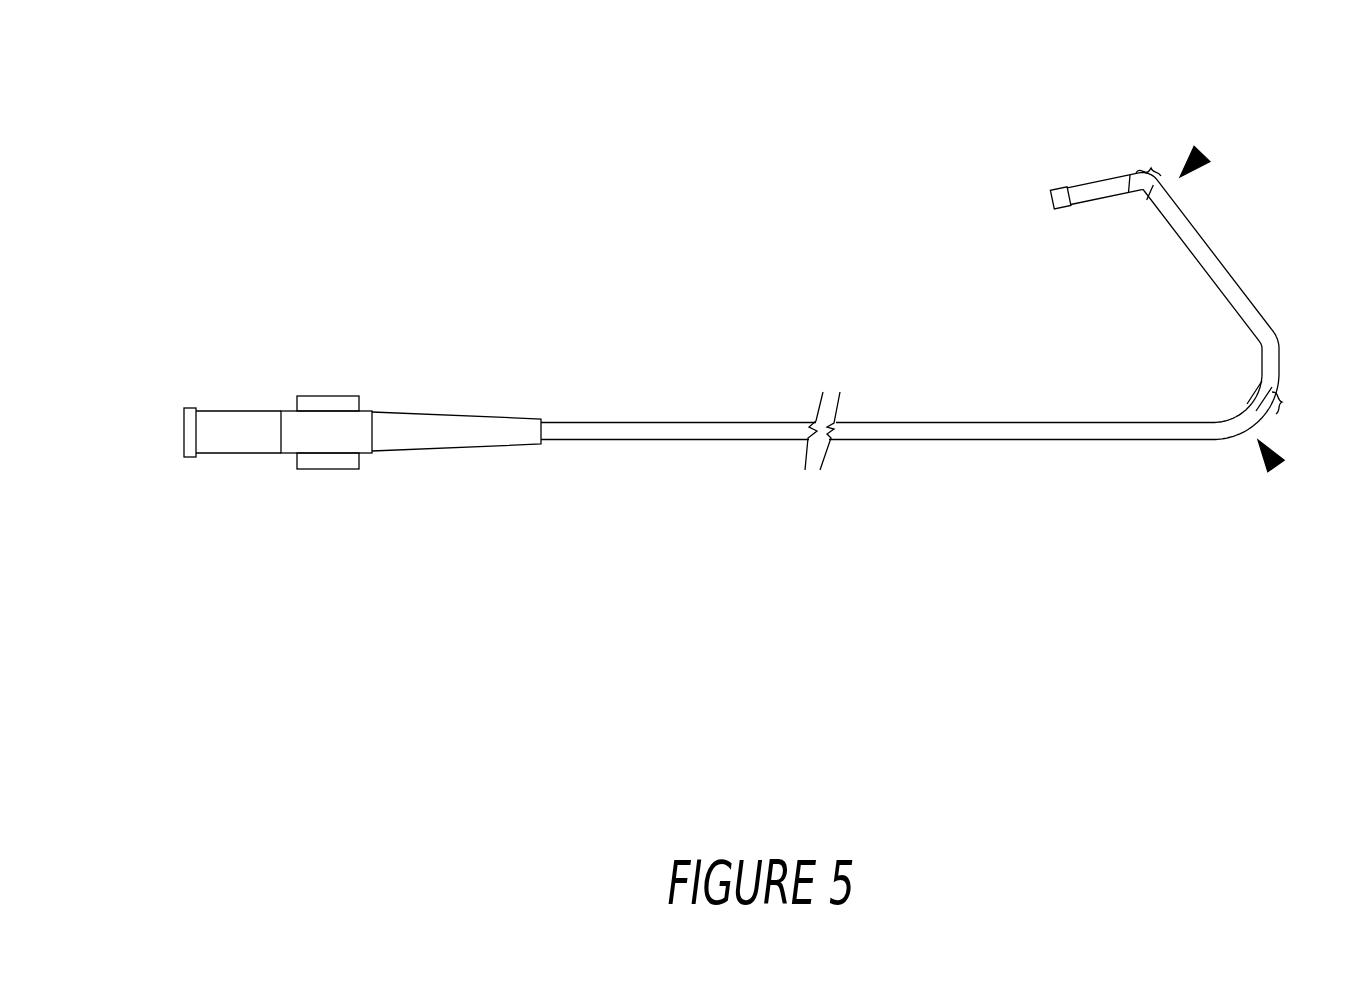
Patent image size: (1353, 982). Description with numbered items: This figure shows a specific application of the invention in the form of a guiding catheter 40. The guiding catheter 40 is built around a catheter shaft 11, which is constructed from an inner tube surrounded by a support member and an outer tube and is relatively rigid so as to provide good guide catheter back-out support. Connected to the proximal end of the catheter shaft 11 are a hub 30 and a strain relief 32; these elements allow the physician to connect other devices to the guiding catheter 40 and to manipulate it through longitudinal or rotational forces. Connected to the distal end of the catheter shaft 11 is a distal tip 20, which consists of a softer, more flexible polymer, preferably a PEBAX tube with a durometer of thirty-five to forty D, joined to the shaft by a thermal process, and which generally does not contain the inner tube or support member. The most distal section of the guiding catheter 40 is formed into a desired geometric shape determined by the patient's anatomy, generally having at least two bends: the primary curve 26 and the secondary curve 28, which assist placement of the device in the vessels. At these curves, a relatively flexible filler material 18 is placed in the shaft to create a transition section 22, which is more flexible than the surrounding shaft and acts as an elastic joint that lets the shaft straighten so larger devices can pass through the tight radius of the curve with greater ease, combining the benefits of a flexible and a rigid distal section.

The catheter shaft 11 is at (1072, 438).
The filler material 18 is at (1140, 187).
The distal tip 20 is at (1059, 193).
The transition section 22 is at (1225, 280).
The primary curve 26 is at (1204, 152).
The secondary curve 28 is at (1276, 467).
The hub 30 is at (323, 470).
The strain relief 32 is at (440, 448).
The guiding catheter 40 is at (1021, 283).